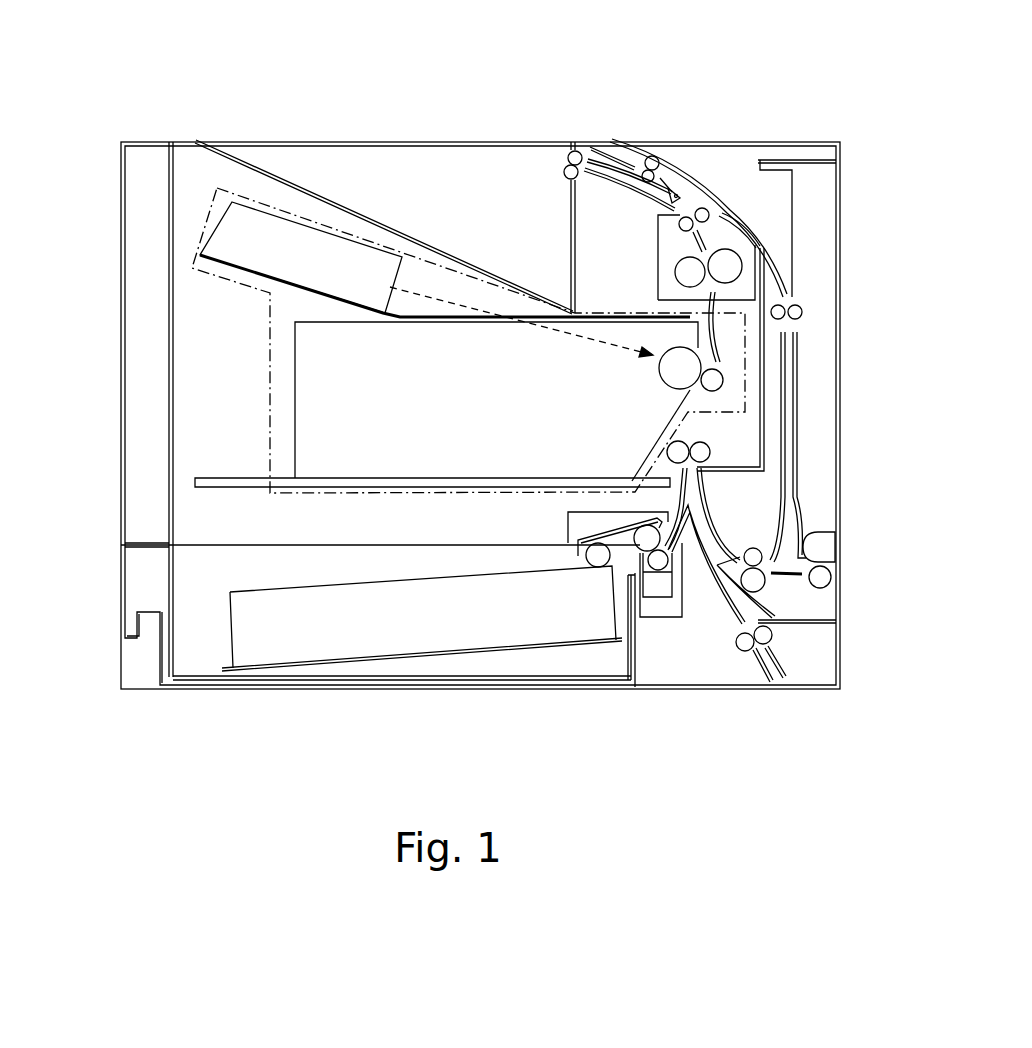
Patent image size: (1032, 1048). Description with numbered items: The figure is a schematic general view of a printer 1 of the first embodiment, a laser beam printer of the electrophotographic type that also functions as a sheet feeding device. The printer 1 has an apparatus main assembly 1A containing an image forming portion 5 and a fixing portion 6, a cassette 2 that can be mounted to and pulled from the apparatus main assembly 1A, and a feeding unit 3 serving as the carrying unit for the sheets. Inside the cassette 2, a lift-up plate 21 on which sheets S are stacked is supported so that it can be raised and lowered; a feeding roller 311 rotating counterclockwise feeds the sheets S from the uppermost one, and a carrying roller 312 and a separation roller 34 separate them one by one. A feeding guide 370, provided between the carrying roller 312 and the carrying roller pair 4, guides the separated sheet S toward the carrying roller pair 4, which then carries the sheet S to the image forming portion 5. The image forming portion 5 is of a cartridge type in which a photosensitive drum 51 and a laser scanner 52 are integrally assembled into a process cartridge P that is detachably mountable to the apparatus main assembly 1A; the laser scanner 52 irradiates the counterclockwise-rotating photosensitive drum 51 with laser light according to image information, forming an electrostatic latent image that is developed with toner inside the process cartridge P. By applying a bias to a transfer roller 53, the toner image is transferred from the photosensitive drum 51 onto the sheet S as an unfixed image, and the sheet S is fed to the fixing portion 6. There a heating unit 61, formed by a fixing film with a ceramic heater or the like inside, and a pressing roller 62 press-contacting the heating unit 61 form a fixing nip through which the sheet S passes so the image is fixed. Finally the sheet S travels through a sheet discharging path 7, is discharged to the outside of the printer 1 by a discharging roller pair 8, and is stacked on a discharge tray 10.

The printer 1 is at (483, 130).
The apparatus main assembly 1A is at (121, 200).
The cassette 2 is at (307, 689).
The lift-up plate 21 is at (445, 657).
The sheet S is at (490, 628).
The process cartridge P is at (320, 393).
The image forming portion 5 is at (287, 207).
The laser scanner 52 is at (243, 233).
The discharge tray 10 is at (355, 213).
The discharging roller pair 8 is at (582, 150).
The sheet discharging path 7 is at (661, 160).
The fixing portion 6 is at (742, 226).
The heating unit 61 is at (707, 220).
The pressing roller 62 is at (732, 268).
The photosensitive drum 51 is at (692, 368).
The transfer roller 53 is at (720, 381).
The carrying roller pair 4 is at (704, 453).
The feeding guide 370 is at (660, 522).
The carrying roller 312 is at (638, 532).
The feeding roller 311 is at (598, 568).
The separation roller 34 is at (668, 566).
The feeding unit 3 is at (663, 608).